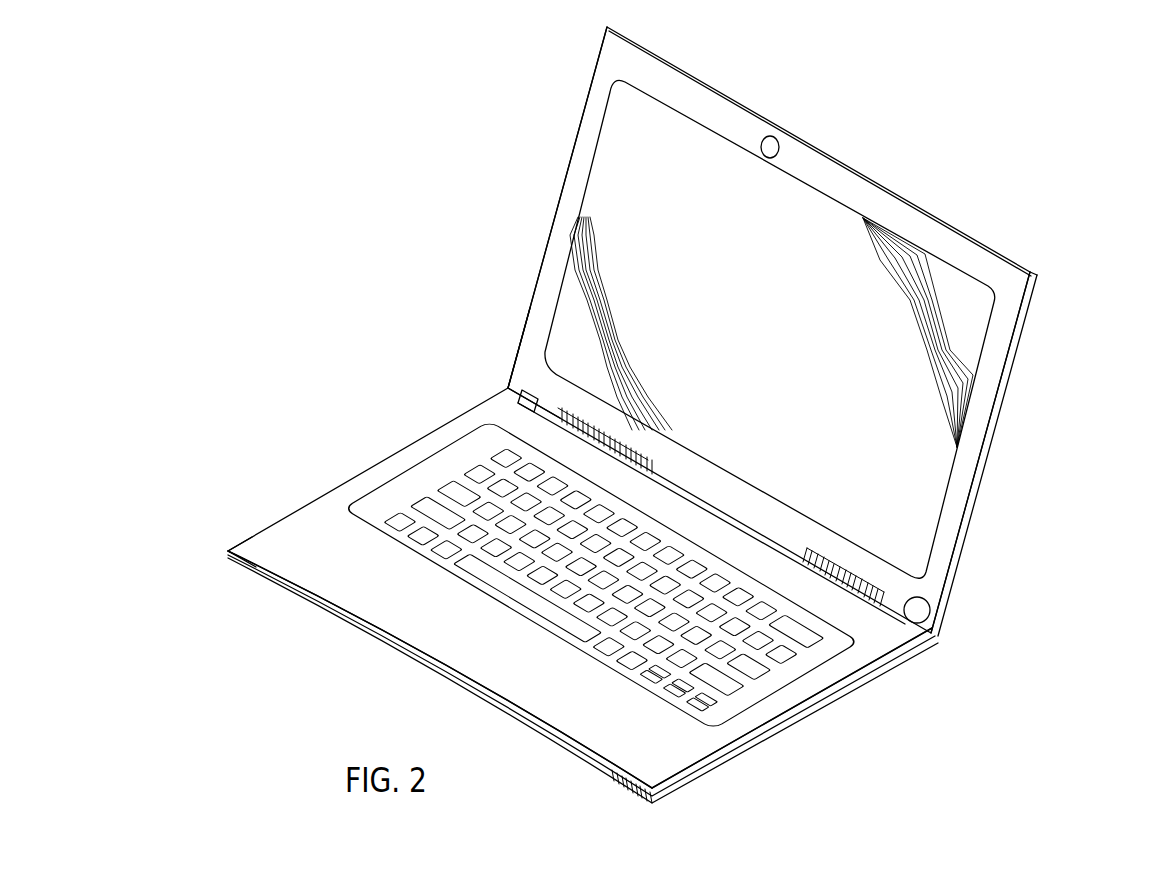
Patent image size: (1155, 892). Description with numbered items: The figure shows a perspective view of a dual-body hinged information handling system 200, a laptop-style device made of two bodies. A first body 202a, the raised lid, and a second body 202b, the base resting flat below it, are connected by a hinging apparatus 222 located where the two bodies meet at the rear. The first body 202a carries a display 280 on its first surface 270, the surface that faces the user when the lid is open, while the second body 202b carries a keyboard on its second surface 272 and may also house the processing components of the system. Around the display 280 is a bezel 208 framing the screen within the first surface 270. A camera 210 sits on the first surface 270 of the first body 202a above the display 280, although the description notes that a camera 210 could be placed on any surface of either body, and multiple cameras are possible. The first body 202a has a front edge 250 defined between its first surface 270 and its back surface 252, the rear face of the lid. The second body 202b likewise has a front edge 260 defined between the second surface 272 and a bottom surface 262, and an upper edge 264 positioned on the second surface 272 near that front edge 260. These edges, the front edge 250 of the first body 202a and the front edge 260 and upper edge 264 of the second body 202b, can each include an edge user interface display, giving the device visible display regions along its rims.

The dual-body hinged information handling system 200 is at (929, 80).
The first body 202a is at (973, 450).
The second body 202b is at (370, 472).
The bezel 208 is at (851, 165).
The camera 210 is at (777, 124).
The hinging apparatus 222 is at (943, 615).
The front edge 250 is at (740, 96).
The back surface 252 is at (1020, 358).
The front edge 260 is at (360, 633).
The bottom surface 262 is at (730, 770).
The upper edge 264 is at (251, 530).
The first surface 270 is at (533, 287).
The second surface 272 is at (463, 406).
The display 280 is at (937, 267).